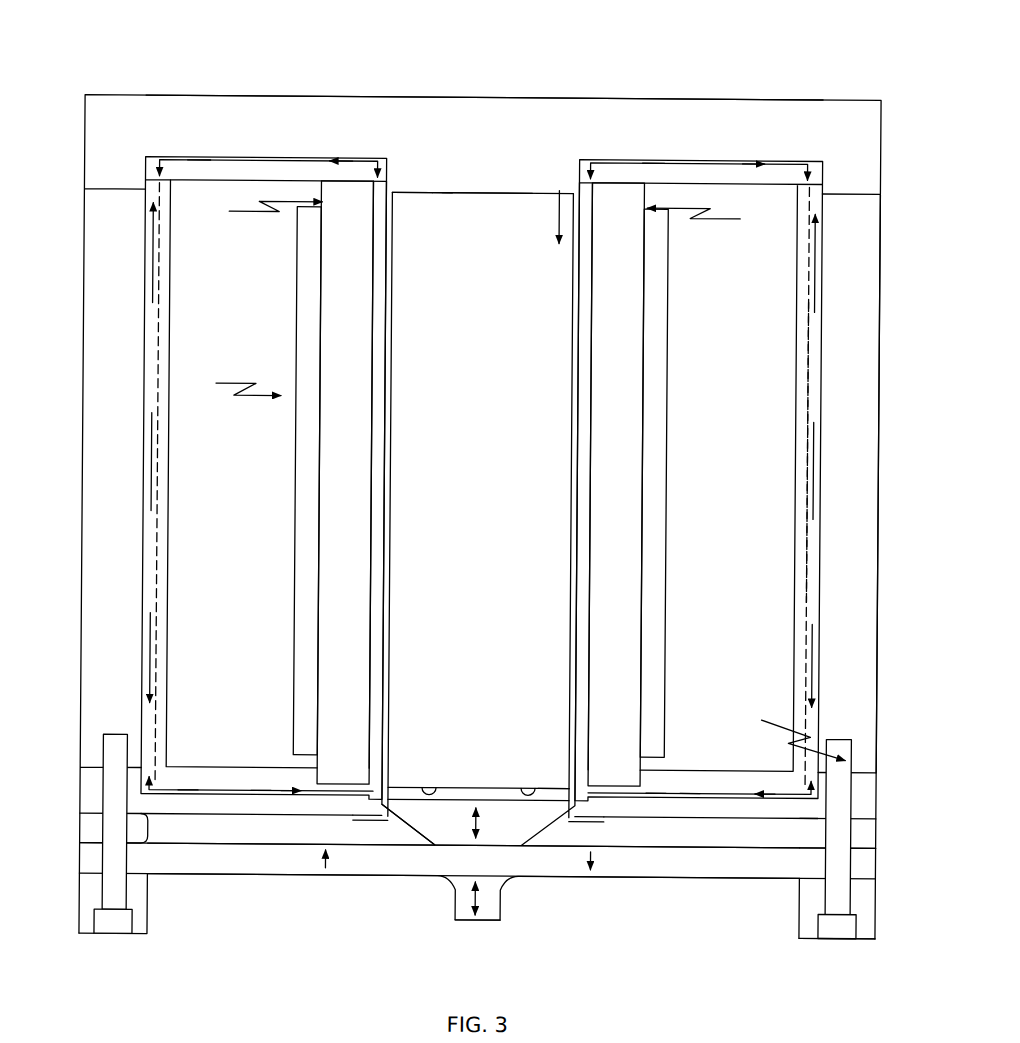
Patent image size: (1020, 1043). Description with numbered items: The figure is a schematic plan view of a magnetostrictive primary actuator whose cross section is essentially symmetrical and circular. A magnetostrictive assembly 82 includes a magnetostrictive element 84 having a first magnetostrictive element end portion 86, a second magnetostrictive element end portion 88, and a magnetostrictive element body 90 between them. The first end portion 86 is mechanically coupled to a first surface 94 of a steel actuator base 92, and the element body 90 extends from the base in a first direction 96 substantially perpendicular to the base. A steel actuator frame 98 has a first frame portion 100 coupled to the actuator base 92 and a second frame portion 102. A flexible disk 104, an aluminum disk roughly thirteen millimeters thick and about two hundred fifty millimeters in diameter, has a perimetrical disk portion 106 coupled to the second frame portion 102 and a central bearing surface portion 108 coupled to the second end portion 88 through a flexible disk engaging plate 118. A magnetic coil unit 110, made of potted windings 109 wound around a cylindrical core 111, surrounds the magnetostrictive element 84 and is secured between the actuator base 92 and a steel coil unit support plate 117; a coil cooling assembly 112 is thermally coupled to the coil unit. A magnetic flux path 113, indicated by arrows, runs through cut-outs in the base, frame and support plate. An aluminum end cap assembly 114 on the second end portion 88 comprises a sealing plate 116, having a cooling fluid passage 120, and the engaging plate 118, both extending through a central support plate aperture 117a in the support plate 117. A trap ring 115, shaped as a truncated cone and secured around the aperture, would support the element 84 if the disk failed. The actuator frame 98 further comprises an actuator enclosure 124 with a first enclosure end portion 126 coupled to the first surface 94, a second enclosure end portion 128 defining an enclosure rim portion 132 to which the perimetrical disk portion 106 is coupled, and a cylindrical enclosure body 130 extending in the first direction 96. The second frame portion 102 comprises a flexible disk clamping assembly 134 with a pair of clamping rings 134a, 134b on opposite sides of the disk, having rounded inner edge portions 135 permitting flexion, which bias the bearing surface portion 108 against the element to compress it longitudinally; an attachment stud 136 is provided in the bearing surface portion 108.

The magnetostrictive assembly 82 is at (229, 387).
The magnetostrictive element 84 is at (482, 297).
The first magnetostrictive element end portion 86 is at (438, 196).
The second magnetostrictive element end portion 88 is at (553, 788).
The magnetostrictive element body 90 is at (485, 205).
The actuator base 92 is at (484, 114).
The first surface 94 is at (422, 190).
The first direction 96 is at (553, 212).
The actuator frame 98 is at (887, 918).
The first frame portion 100 is at (880, 248).
The second frame portion 102 is at (875, 866).
The flexible disk 104 is at (253, 873).
The perimetrical disk portion 106 is at (158, 855).
The bearing surface portion 108 is at (447, 878).
The potted windings 109 is at (358, 543).
The magnetic coil unit 110 is at (481, 213).
The cylindrical core 111 is at (385, 492).
The coil cooling assembly 112 is at (300, 308).
The magnetic flux path 113 is at (262, 158).
The end cap assembly 114 is at (550, 834).
The trap ring 115 is at (378, 818).
The sealing plate 116 is at (403, 790).
The coil unit support plate 117 is at (258, 800).
The central support plate aperture 117a is at (408, 832).
The flexible disk engaging plate 118 is at (447, 823).
The cooling fluid passage 120 is at (432, 788).
The actuator enclosure 124 is at (479, 479).
The first enclosure end portion 126 is at (892, 172).
The second enclosure end portion 128 is at (779, 731).
The enclosure body 130 is at (828, 556).
The enclosure rim portion 132 is at (96, 765).
The flexible disk clamping assembly 134 is at (80, 873).
The clamping ring 134a is at (155, 835).
The clamping ring 134b is at (138, 935).
The rounded inner edge portions 135 is at (802, 842).
The attachment stud 136 is at (503, 918).